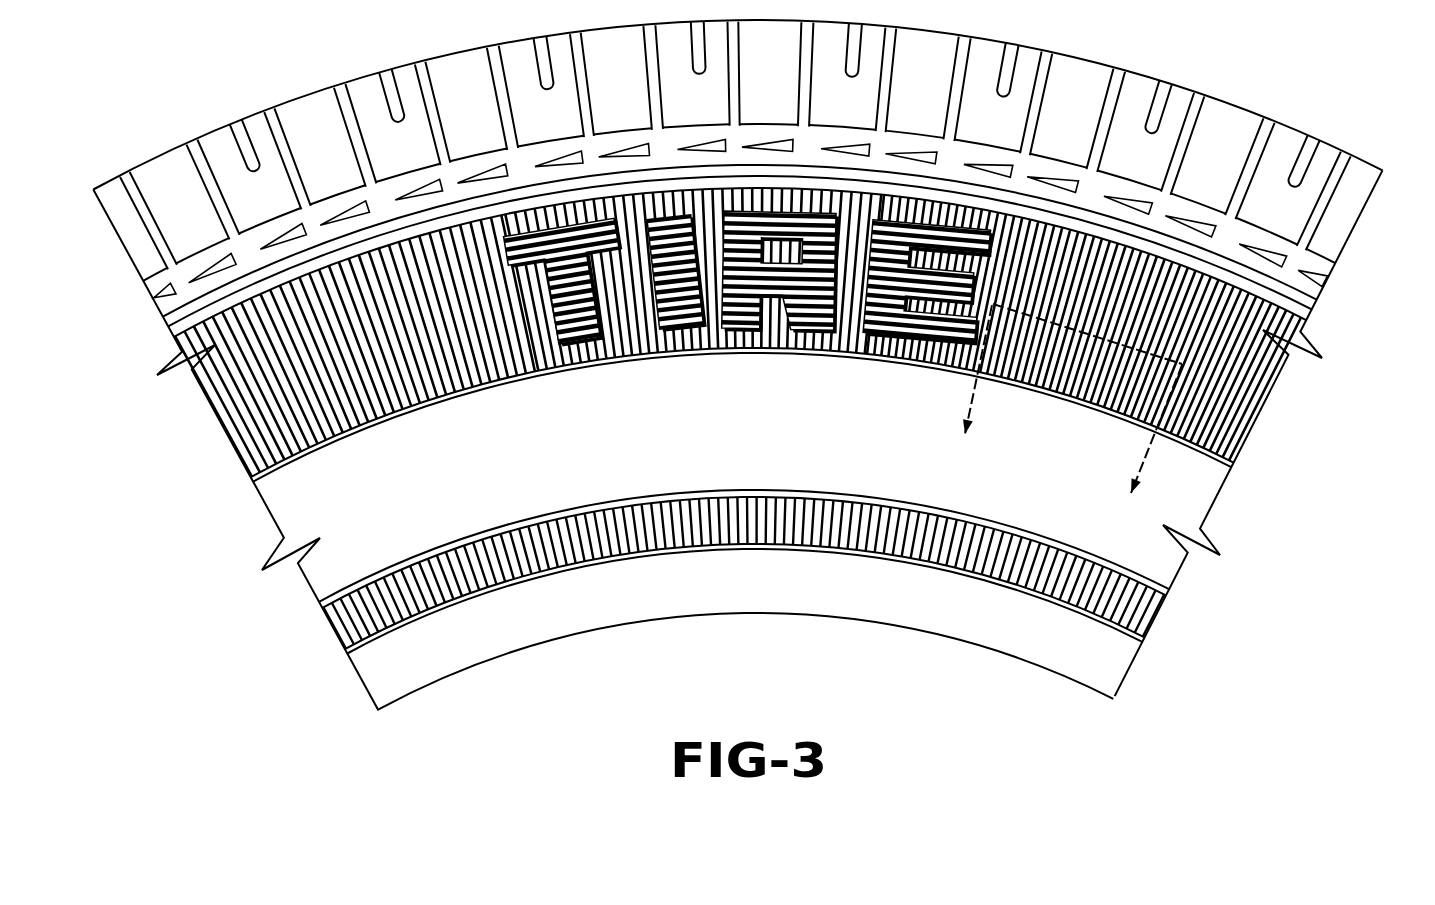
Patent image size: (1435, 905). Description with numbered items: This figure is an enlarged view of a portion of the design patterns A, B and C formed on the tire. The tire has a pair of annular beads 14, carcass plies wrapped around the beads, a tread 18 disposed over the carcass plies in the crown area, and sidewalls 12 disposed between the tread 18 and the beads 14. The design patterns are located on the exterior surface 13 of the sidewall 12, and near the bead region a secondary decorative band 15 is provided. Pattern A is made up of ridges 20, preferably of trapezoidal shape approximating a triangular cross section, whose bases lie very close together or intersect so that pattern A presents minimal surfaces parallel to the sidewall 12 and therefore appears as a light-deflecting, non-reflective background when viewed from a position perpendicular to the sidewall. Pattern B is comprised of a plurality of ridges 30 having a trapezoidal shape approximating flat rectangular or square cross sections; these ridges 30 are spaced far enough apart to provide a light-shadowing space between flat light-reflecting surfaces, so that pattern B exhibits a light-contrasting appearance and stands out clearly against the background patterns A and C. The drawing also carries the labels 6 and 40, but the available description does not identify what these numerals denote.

The section line 6- 6 is at (1063, 417).
The sidewall 12 is at (308, 492).
The exterior surface 13 is at (1152, 548).
The annular beads 14 is at (1148, 663).
The secondary decorative band 15 is at (1156, 610).
The tread 18 is at (1147, 77).
The ridges 20 is at (253, 397).
The ridges 30 is at (531, 238).
The layer boundary 40 is at (1316, 300).